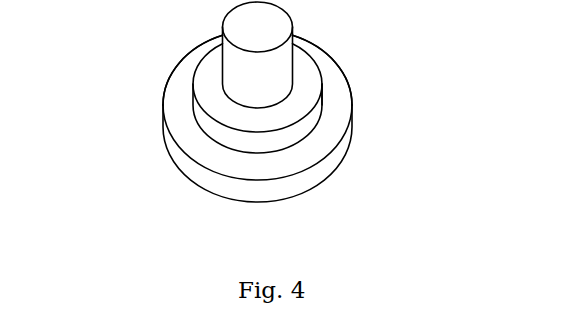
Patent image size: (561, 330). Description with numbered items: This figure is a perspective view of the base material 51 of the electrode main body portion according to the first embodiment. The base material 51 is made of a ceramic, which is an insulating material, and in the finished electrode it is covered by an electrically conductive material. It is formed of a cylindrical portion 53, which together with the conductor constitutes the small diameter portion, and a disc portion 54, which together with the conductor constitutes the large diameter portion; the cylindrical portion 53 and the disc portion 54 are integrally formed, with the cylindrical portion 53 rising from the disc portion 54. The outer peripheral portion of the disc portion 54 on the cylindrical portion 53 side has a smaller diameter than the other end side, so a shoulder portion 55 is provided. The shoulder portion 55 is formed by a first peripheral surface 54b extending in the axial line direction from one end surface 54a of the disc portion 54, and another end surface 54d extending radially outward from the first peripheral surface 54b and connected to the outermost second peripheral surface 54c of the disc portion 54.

The base material 51 is at (172, 48).
The cylindrical portion 53 is at (293, 65).
The disc portion 54 is at (346, 149).
The one end surface 54a is at (212, 85).
The first peripheral surface 54b is at (202, 120).
The second peripheral surface 54c is at (187, 176).
The another end surface 54d is at (232, 165).
The shoulder portion 55 is at (340, 103).